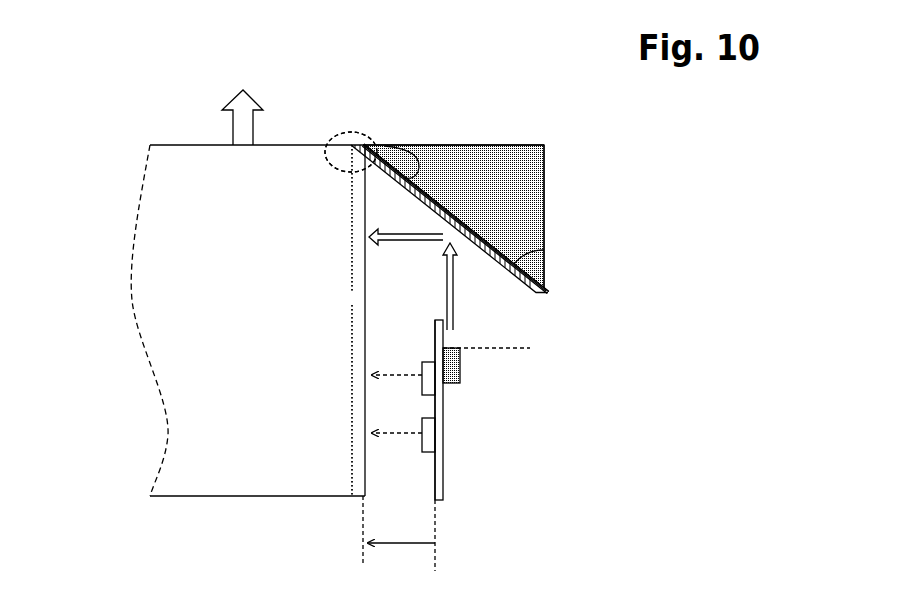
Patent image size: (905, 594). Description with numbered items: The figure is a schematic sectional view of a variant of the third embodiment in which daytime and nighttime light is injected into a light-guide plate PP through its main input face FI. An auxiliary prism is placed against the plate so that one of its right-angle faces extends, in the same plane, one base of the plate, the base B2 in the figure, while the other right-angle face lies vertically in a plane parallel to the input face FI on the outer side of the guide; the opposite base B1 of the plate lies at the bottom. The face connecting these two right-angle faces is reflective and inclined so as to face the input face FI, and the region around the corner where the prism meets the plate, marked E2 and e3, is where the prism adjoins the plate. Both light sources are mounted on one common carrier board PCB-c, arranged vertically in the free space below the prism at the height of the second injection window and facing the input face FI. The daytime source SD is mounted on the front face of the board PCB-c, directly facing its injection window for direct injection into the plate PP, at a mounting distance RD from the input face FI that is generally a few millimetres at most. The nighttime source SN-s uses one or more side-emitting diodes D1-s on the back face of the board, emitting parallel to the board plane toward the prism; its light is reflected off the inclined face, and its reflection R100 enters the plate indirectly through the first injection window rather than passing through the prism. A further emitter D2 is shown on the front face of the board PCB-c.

The plate PP is at (140, 178).
The base of the plate B2 is at (198, 141).
The bottom boundary / direction B1 is at (261, 500).
The edge region E2 is at (350, 133).
The edge point e3 is at (351, 152).
The reflective layer R100 is at (546, 296).
The main input face FI is at (358, 320).
The nighttime light source SN-s is at (455, 494).
The daytime light source SD is at (426, 486).
The side-emitting diode D1-s is at (461, 376).
The second detector / LED D2 is at (421, 373).
The common carrier board PCB-c is at (443, 419).
The mounting distance RD is at (399, 533).